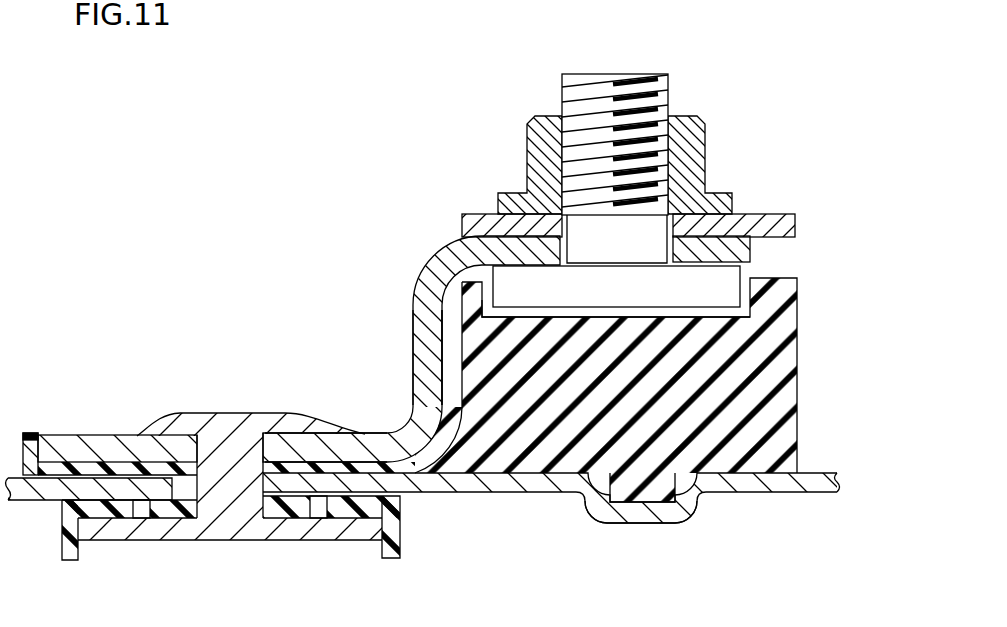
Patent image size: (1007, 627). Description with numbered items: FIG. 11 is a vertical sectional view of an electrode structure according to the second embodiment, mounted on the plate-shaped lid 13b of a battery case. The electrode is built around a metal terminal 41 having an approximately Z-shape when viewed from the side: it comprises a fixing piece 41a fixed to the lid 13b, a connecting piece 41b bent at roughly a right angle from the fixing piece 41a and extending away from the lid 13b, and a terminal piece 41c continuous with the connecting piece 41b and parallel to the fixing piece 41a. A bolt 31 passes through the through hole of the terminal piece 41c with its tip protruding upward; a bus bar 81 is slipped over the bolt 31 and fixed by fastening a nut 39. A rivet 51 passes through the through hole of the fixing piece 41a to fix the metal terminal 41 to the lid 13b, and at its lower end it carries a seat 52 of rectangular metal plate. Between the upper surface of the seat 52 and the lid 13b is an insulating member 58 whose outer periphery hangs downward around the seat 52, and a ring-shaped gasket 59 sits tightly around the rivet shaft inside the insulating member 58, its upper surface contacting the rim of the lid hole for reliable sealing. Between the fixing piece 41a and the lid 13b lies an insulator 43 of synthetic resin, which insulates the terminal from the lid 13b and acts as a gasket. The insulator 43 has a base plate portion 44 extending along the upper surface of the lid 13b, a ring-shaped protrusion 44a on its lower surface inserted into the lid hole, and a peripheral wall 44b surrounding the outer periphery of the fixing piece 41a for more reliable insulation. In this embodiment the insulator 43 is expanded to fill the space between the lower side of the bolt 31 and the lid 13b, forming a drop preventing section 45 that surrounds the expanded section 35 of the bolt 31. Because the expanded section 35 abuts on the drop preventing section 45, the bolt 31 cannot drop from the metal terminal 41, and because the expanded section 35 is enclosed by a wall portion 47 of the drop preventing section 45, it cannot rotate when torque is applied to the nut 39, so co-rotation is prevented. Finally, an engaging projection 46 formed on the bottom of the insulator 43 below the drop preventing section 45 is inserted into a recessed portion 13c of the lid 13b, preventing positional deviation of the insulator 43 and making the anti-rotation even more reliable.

The bolt 31 is at (616, 74).
The nut 39 is at (690, 140).
The bus bar 81 is at (475, 223).
The terminal piece 41c is at (733, 248).
The expanded section 35 is at (517, 277).
The drop preventing section 45 is at (537, 327).
The wall portion 47 is at (780, 298).
The metal terminal 41 is at (406, 342).
The connecting piece 41b is at (430, 367).
The insulator 43 is at (449, 404).
The base plate portion 44 is at (435, 458).
The ring-shaped protrusion 44a is at (271, 505).
The peripheral wall 44b is at (28, 433).
The fixing piece 41a is at (100, 450).
The rivet 51 is at (228, 450).
The seat 52 is at (137, 533).
The insulating member 58 is at (72, 557).
The gasket 59 is at (173, 508).
The engaging projection 46 is at (643, 492).
The lid 13b is at (802, 480).
The recessed portion 13c is at (648, 512).